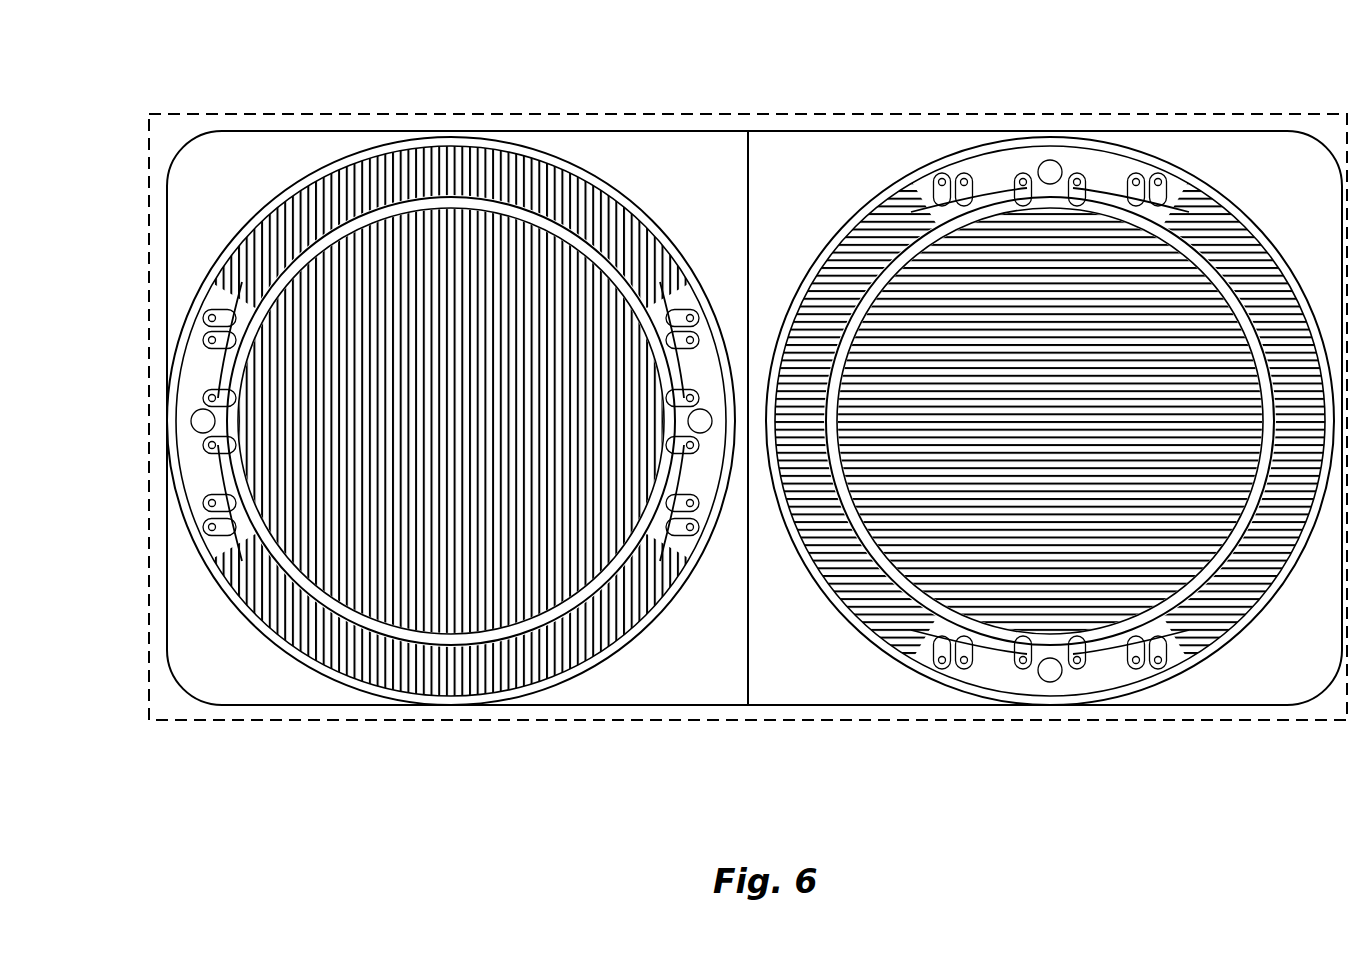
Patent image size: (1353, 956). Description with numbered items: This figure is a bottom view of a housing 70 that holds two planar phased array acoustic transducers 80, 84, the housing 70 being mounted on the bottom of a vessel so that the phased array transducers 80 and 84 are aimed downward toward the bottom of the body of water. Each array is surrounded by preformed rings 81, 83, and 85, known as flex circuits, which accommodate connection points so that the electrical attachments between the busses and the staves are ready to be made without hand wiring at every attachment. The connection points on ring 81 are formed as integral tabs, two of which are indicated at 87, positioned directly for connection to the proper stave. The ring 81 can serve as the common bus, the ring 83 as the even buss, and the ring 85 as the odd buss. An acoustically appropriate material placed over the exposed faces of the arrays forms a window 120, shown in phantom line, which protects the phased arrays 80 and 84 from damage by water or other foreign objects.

The housing 70 is at (226, 185).
The ring 81 is at (548, 222).
The window 120 is at (862, 120).
The ring 85 is at (203, 305).
The ring 83 is at (203, 342).
The phased array transducer 80 is at (396, 416).
The tabs 87 is at (833, 598).
The phased array transducer 84 is at (1050, 453).